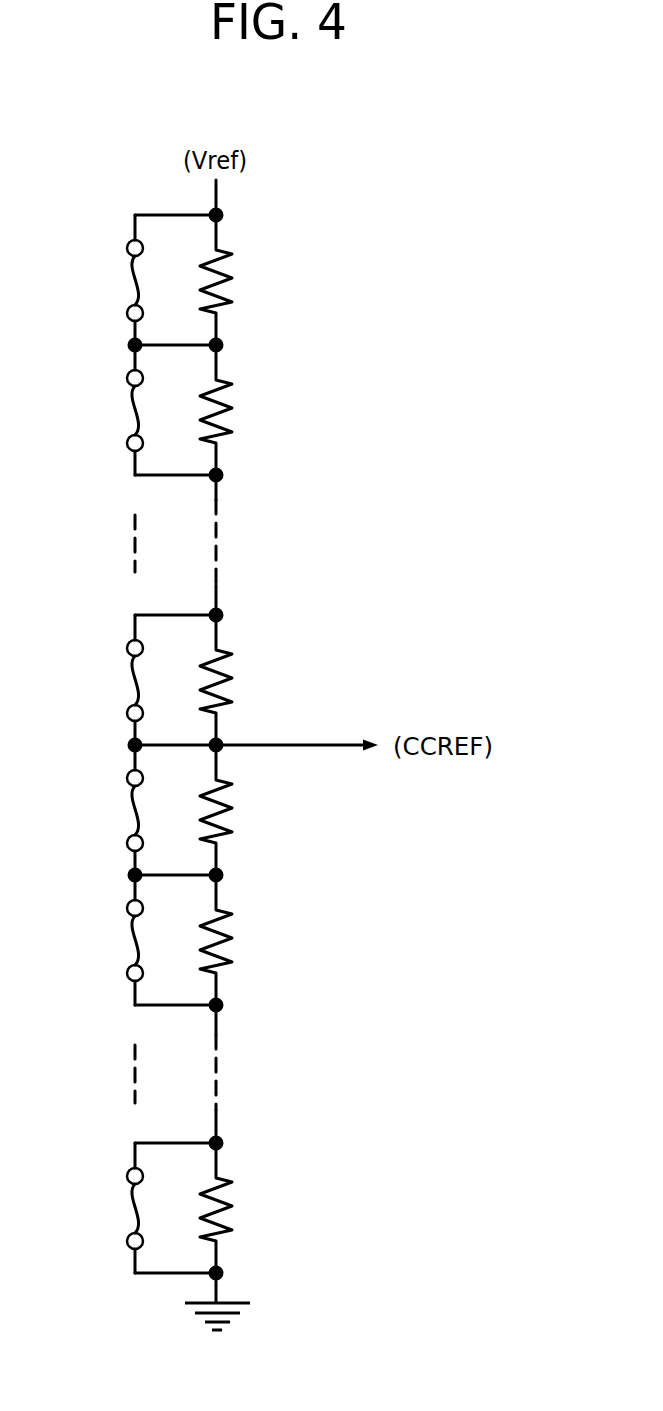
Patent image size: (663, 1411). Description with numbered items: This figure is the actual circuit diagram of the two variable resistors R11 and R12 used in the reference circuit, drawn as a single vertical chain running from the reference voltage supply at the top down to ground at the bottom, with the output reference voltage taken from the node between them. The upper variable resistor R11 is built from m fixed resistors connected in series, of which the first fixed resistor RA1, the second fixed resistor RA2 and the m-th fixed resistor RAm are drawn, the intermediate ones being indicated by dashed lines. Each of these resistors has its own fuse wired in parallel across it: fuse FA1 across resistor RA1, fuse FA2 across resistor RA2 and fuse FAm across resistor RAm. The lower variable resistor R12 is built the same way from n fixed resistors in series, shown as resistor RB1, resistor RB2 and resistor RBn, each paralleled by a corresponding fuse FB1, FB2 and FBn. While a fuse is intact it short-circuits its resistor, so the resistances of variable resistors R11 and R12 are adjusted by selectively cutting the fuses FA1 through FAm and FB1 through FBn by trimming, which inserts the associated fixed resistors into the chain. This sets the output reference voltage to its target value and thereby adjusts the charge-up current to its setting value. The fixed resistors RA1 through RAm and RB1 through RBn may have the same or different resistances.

The variable resistor R11 is at (378, 331).
The variable resistor R12 is at (258, 1012).
The fixed resistor RA1 is at (244, 280).
The fixed resistor RA2 is at (244, 410).
The fixed resistor RAm is at (248, 680).
The fixed resistor RB1 is at (244, 810).
The fixed resistor RB2 is at (244, 940).
The fixed resistor RBn is at (246, 1208).
The fuse FA1 is at (108, 280).
The fuse FA2 is at (108, 410).
The fuse FAm is at (106, 680).
The fuse FB1 is at (108, 810).
The fuse FB2 is at (108, 940).
The fuse FBn is at (108, 1208).